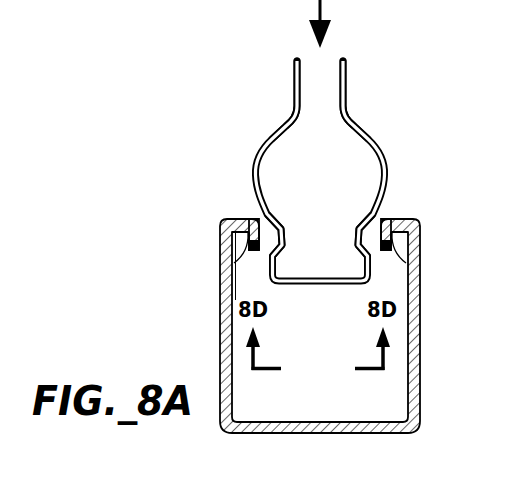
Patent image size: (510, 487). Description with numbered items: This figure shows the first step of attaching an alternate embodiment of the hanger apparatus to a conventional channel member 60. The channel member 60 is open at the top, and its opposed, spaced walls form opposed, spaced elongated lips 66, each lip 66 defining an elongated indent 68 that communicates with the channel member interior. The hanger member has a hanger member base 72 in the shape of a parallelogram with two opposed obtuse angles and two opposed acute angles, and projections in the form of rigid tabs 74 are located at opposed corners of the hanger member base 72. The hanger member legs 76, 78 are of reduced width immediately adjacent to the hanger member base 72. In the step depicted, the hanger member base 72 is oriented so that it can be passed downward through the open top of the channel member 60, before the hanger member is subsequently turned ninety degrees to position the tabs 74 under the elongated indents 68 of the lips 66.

The channel member 60 is at (412, 352).
The lip 66 is at (259, 222).
The elongated indent 68 is at (236, 263).
The hanger member base 72 is at (301, 284).
The rigid tab 74 is at (270, 263).
The hanger member leg 76 is at (293, 108).
The hanger member leg 78 is at (364, 126).